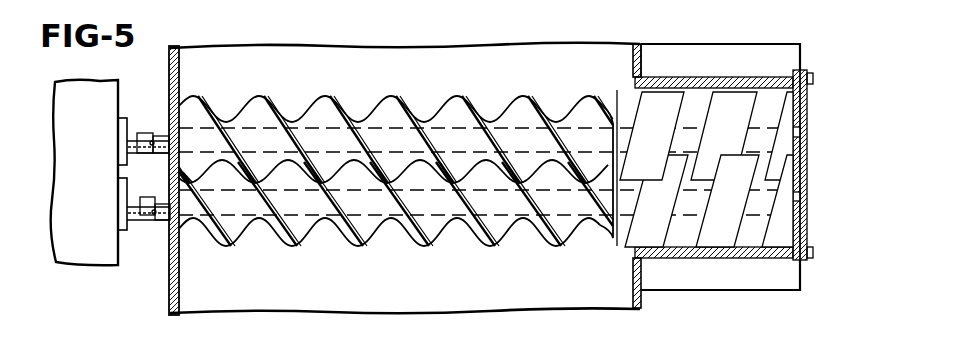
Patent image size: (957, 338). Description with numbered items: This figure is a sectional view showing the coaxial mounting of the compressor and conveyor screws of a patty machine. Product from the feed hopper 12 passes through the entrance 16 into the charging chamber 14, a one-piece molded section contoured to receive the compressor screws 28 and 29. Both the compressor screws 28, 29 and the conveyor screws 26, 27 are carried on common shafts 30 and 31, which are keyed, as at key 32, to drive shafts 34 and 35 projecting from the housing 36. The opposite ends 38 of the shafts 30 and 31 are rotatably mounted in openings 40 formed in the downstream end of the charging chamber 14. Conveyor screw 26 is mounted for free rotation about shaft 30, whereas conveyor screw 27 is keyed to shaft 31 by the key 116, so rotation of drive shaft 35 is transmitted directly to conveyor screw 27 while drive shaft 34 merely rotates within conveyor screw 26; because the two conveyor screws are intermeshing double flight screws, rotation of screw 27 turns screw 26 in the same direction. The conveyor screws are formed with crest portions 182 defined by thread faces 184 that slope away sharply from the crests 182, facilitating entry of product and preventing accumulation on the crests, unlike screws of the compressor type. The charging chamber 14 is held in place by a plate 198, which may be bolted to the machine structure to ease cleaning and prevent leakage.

The feed hopper 12 is at (170, 68).
The charging chamber 14 is at (735, 259).
The entrance 16 is at (630, 95).
The conveyor screw 26 is at (456, 107).
The conveyor screw 27 is at (372, 231).
The compressor screw 28 is at (662, 102).
The compressor screw 29 is at (700, 243).
The shaft 30 is at (337, 123).
The shaft 31 is at (309, 222).
The key 32 is at (154, 203).
The drive shaft 34 is at (133, 137).
The drive shaft 35 is at (137, 219).
The housing 36 is at (91, 153).
The opposite ends 38 is at (828, 165).
The openings 40 is at (804, 112).
The key 116 is at (194, 232).
The crest portions 182 is at (483, 103).
The faces 184 is at (316, 108).
The plate 198 is at (808, 228).